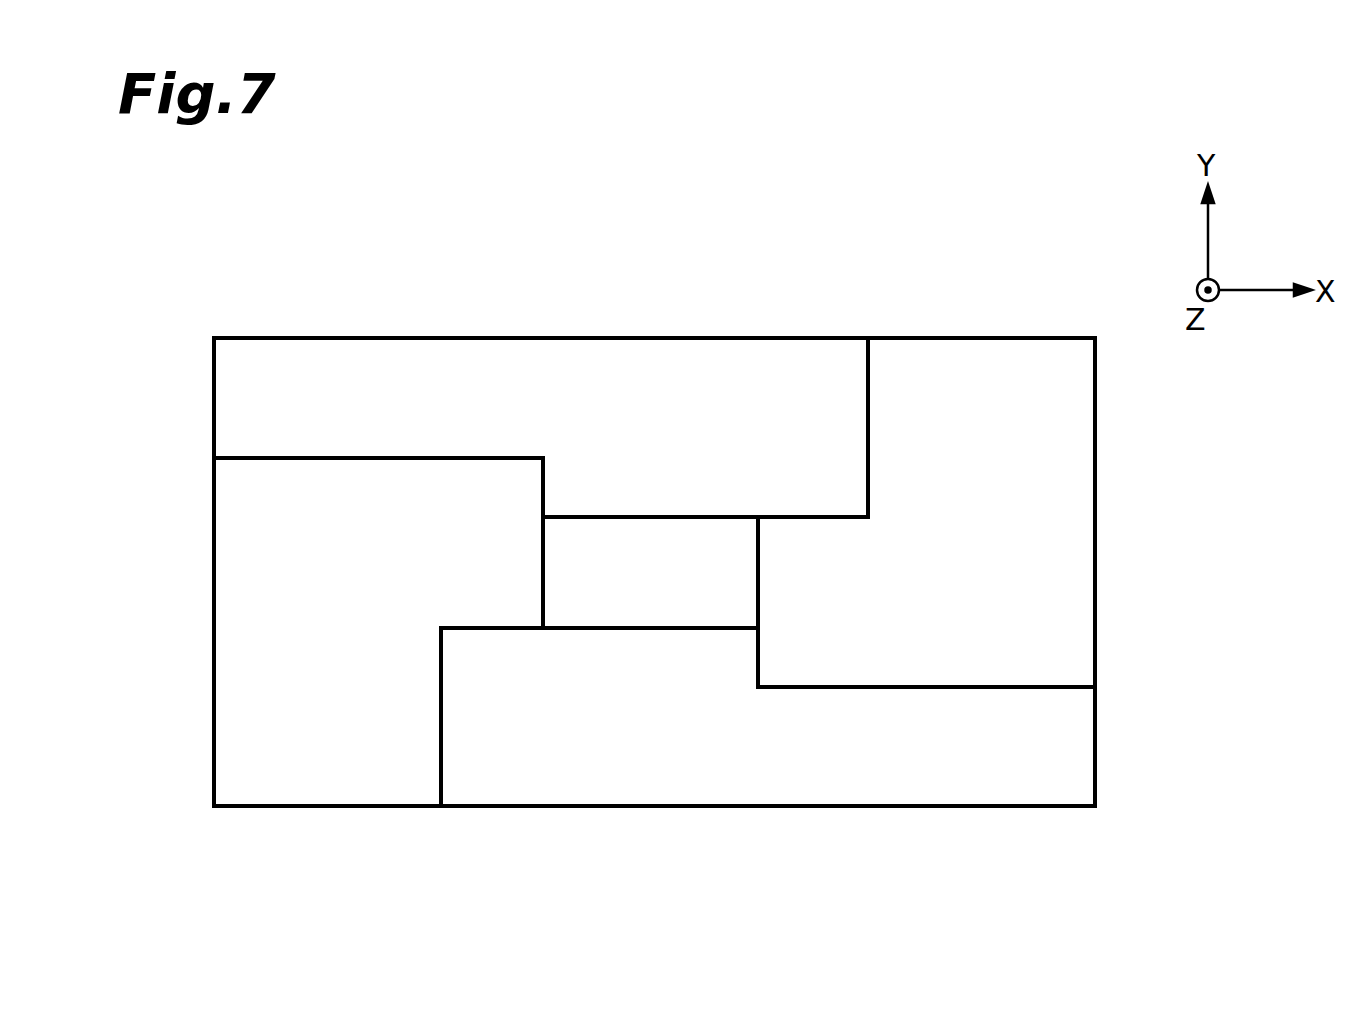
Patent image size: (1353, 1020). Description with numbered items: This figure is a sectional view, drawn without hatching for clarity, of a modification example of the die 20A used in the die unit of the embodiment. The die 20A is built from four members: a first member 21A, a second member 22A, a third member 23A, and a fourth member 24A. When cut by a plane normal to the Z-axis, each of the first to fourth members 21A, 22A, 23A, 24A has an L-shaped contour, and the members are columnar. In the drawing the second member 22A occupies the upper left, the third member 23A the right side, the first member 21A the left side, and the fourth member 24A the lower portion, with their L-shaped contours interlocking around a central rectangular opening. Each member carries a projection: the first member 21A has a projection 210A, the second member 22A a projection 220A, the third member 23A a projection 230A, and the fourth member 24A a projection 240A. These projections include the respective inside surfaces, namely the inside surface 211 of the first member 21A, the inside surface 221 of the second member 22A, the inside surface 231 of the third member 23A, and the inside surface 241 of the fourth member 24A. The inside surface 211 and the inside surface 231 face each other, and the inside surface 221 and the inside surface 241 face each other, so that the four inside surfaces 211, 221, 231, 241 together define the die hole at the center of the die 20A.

The die 20A is at (971, 288).
The first member 21A is at (242, 644).
The second member 22A is at (621, 336).
The third member 23A is at (1077, 630).
The fourth member 24A is at (601, 778).
The projection 210A is at (508, 541).
The projection 220A is at (828, 505).
The projection 230A is at (790, 548).
The projection 240A is at (718, 648).
The inside surface 211 is at (545, 562).
The inside surface 221 is at (617, 518).
The inside surface 231 is at (757, 561).
The inside surface 241 is at (680, 628).